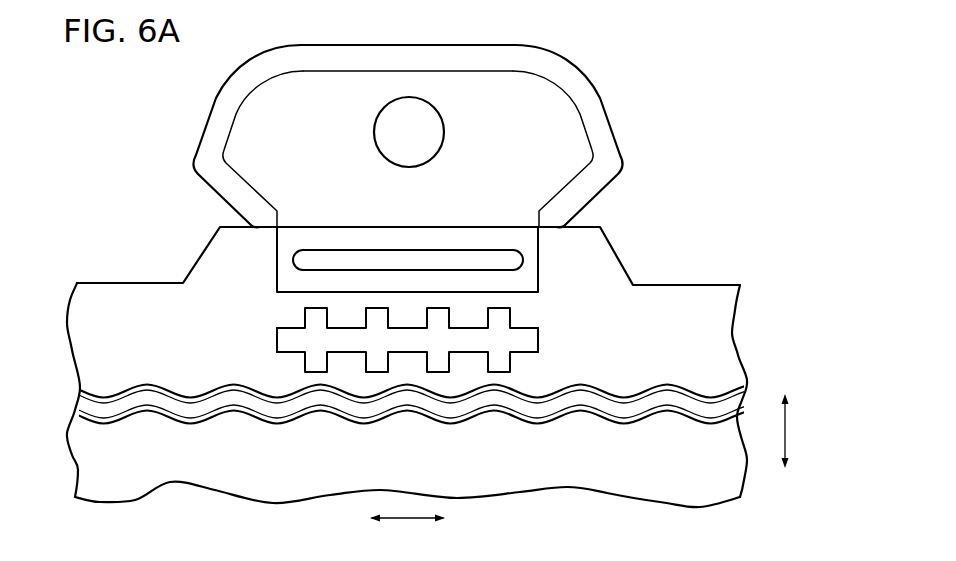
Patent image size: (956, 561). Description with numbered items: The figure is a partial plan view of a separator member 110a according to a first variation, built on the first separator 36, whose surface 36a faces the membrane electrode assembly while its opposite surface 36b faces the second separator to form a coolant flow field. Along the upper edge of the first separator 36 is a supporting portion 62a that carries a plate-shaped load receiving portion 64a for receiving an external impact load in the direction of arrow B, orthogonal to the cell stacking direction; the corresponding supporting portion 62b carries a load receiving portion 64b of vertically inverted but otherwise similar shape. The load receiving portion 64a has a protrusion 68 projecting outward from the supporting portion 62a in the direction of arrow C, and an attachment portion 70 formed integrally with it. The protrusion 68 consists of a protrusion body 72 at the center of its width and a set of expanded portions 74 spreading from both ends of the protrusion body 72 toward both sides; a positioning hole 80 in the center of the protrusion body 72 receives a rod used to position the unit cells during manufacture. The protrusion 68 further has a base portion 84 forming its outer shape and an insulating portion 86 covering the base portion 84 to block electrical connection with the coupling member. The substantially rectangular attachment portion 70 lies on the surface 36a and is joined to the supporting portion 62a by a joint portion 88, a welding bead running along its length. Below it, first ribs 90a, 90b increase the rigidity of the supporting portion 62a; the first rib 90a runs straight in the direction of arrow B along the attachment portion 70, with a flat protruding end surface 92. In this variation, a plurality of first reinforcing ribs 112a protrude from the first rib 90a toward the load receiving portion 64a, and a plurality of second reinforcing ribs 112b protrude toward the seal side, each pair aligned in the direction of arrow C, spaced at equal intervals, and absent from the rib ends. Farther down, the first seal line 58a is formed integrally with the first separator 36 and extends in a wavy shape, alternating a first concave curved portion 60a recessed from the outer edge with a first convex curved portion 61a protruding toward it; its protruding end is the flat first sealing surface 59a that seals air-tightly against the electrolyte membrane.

The separator member 110a is at (138, 93).
The load receiving portion 64a is at (433, 117).
The load receiving portion 64b is at (586, 62).
The protrusion body 72 is at (400, 53).
The expanded portions 74 is at (207, 163).
The protrusion 68 is at (657, 80).
The base portion 84 is at (567, 108).
The insulating portion 86 is at (602, 133).
The positioning hole 80 is at (428, 148).
The supporting portion 62a is at (408, 240).
The supporting portion 62b is at (607, 265).
The attachment portion 70 is at (277, 260).
The joint portion 88 is at (332, 258).
The first separator 36 is at (602, 485).
The surface 36a is at (720, 337).
The surface 36b is at (722, 313).
The first rib 90a is at (367, 342).
The first rib 90b is at (265, 324).
The protruding end surface 92 is at (287, 338).
The first reinforcing ribs 112a is at (502, 318).
The second reinforcing ribs 112b is at (503, 360).
The first seal line 58a is at (525, 460).
The first sealing surface 59a is at (667, 400).
The first concave curved portion 60a is at (453, 425).
The first convex curved portion 61a is at (495, 412).